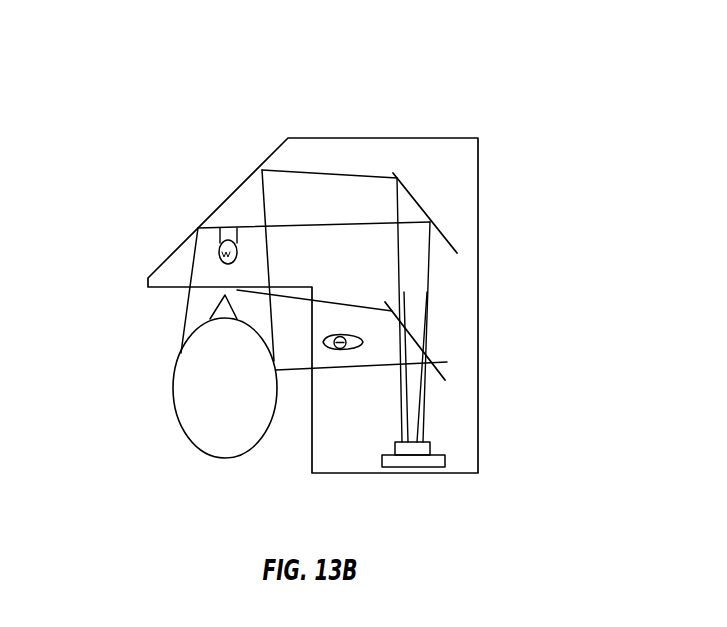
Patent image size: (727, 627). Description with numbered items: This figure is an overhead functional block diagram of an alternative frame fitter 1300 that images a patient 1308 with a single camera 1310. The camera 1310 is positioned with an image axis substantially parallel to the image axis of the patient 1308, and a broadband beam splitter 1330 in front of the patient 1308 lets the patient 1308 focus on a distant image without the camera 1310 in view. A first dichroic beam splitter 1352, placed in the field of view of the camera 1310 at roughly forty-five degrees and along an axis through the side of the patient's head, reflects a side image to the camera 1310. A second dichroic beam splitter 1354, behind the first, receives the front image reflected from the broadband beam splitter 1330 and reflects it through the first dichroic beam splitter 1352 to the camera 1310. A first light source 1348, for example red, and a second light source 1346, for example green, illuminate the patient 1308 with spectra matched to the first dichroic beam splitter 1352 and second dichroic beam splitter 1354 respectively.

The frame fitter 1300 is at (511, 75).
The broadband beam splitter 1330 is at (272, 154).
The second dichroic beam splitter 1354 is at (452, 243).
The first dichroic beam splitter 1352 is at (443, 368).
The camera 1310 is at (445, 462).
The first light source 1348 is at (348, 334).
The second light source 1346 is at (218, 258).
The patient 1308 is at (173, 392).